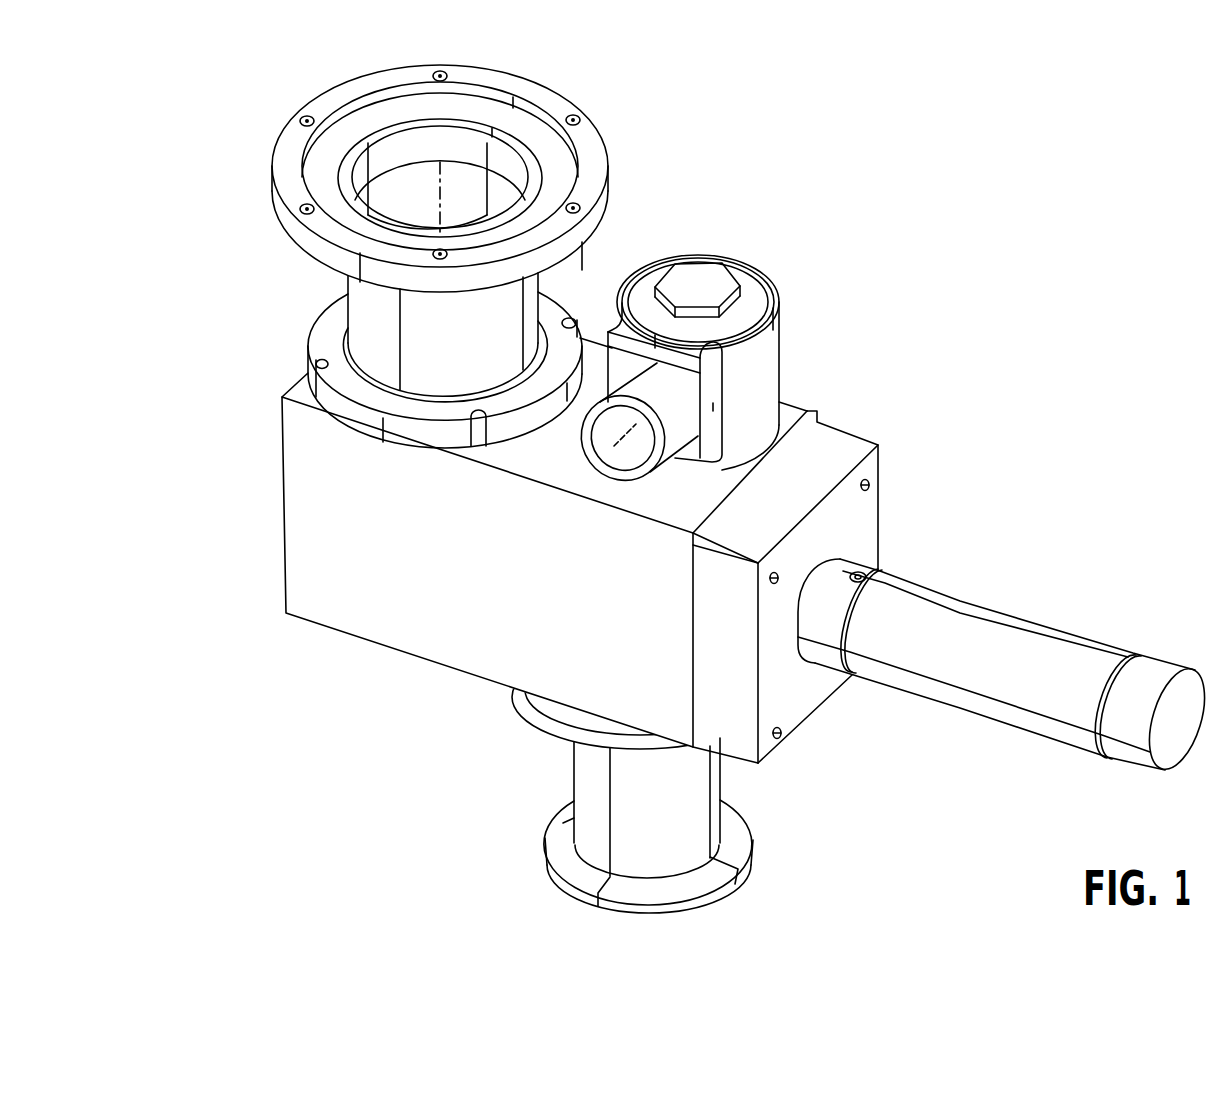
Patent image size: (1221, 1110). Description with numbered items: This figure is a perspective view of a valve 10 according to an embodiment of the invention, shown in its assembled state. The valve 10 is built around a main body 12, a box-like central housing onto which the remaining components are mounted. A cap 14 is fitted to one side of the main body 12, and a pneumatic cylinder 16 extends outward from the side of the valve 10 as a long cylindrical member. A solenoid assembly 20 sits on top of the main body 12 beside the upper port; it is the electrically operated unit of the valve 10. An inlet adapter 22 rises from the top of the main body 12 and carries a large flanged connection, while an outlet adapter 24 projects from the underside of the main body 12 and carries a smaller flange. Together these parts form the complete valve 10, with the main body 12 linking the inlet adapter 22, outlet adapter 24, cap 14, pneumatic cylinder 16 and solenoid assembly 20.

The valve 10 is at (669, 80).
The main body 12 is at (310, 565).
The cap 14 is at (872, 513).
The pneumatic cylinder 16 is at (1100, 647).
The solenoid assembly 20 is at (773, 357).
The inlet adapter 22 is at (353, 306).
The outlet adapter 24 is at (715, 795).